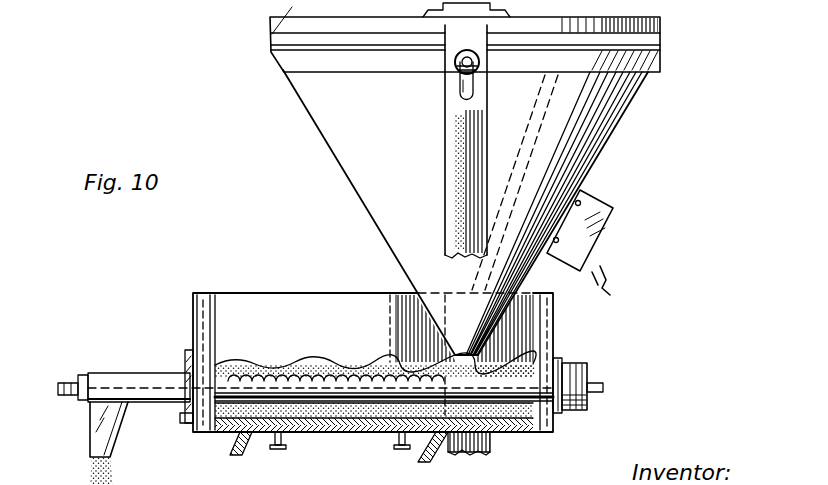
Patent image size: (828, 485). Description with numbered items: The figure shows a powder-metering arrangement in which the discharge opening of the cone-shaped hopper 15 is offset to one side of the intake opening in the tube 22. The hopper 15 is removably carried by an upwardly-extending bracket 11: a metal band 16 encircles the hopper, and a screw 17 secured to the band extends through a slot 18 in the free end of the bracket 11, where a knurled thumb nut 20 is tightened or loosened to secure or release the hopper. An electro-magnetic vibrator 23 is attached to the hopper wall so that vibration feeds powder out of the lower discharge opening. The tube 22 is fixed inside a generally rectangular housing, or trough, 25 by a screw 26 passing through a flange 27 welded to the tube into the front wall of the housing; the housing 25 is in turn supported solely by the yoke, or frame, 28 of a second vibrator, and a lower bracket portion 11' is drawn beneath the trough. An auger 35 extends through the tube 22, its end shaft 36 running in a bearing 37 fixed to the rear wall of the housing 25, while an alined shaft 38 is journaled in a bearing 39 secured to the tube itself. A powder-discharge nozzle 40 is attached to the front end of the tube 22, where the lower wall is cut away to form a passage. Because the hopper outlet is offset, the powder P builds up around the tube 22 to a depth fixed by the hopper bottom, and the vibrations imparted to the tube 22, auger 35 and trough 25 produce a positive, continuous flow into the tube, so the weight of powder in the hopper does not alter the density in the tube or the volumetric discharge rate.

The metal band 16 is at (662, 60).
The cone-shaped hopper 15 is at (356, 190).
The upwardly-extending bracket 11 is at (441, 141).
The screw 17 is at (462, 78).
The slot 18 is at (466, 96).
The knurled thumb nut 20 is at (456, 65).
The electro-magnetic vibrator 23 is at (618, 205).
The flange 27 is at (190, 293).
The auger 35 is at (325, 364).
The powder P is at (520, 362).
The screw 26 is at (186, 355).
The tube 22 is at (150, 376).
The bearing 39 is at (86, 374).
The alined shaft 38 is at (66, 383).
The powder-discharge nozzle 40 is at (112, 438).
The yoke or frame 28 is at (238, 446).
The lower lug 11' is at (454, 458).
The housing or trough 25 is at (557, 370).
The bearing 37 is at (588, 363).
The end shaft 36 is at (603, 387).